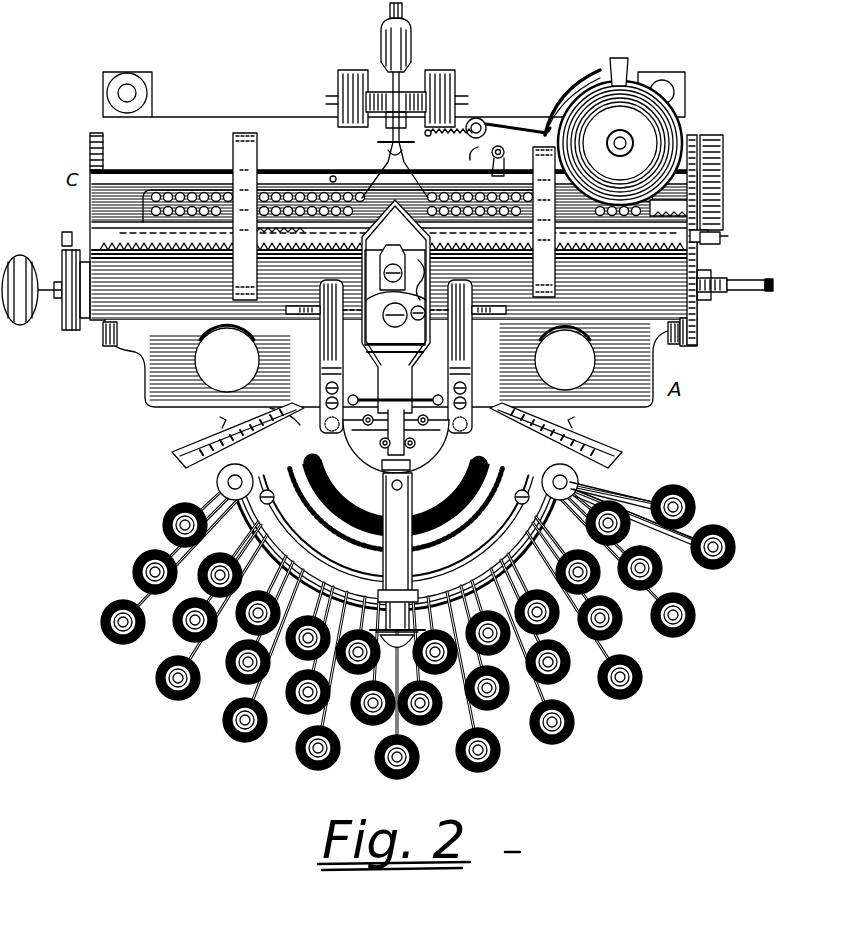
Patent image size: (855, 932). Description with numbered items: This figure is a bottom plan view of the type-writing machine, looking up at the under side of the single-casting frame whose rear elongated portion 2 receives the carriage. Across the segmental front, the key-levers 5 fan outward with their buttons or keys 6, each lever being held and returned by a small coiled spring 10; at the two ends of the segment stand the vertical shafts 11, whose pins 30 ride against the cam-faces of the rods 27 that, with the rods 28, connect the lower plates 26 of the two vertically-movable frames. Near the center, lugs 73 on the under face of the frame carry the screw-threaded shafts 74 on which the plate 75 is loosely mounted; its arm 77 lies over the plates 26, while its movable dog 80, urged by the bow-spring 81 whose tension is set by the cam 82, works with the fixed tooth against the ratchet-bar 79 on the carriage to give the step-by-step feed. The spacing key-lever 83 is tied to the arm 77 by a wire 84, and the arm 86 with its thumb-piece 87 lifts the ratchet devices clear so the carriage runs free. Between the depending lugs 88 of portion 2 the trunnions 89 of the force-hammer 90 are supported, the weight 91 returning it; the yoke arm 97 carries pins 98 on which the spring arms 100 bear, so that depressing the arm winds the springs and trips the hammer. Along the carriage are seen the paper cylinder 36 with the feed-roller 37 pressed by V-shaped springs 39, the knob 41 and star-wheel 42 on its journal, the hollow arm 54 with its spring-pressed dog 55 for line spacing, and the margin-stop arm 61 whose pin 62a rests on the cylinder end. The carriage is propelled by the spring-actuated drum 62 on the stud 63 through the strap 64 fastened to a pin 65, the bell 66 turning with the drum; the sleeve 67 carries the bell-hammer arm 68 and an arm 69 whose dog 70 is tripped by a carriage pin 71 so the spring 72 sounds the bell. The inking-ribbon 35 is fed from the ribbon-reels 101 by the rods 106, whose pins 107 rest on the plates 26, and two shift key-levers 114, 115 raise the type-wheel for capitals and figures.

The rear elongated portion 2 is at (648, 412).
The key-levers 5 is at (372, 536).
The buttons or keys 6 is at (418, 632).
The coiled springs 10 is at (360, 512).
The vertical shafts 11 is at (470, 412).
The plates 26 is at (398, 450).
The rods 27 is at (396, 441).
The rods 28 is at (396, 460).
The pins 30 is at (398, 426).
The inking-ribbon 35 is at (280, 408).
The cylinder 36 is at (176, 188).
The feed-roller 37 is at (227, 352).
The springs 39 is at (698, 362).
The knob 41 is at (32, 305).
The star-wheel 42 is at (70, 330).
The hollow arm 54 is at (735, 278).
The spring-pressed dog 55 is at (770, 288).
The arm 61 is at (723, 190).
The spring-actuated drum 62 is at (697, 135).
The pin 62a is at (722, 232).
The stud 63 is at (620, 143).
The strap 64 is at (465, 218).
The pin 65 is at (578, 80).
The bell 66 is at (628, 128).
The sleeve 67 is at (484, 118).
The bell-hammer arm 68 is at (608, 66).
The arm 69 is at (506, 152).
The spring-actuated dog 70 is at (470, 158).
The pin 71 is at (334, 176).
The spring 72 is at (444, 126).
The lugs 73 is at (472, 336).
The screw-threaded shafts 74 is at (492, 298).
The plate 75 is at (386, 321).
The arm 77 is at (380, 395).
The ratchet-bar 79 is at (456, 228).
The movable dog 80 is at (378, 278).
The bow-spring 81 is at (426, 300).
The cam 82 is at (418, 322).
The key-lever 83 is at (400, 740).
The wire 84 is at (397, 537).
The arm 86 is at (396, 568).
The thumb-piece 87 is at (384, 572).
The depending lugs 88 is at (396, 98).
The trunnions 89 is at (432, 80).
The force-hammer 90 is at (402, 10).
The weight 91 is at (378, 40).
The arm 97 is at (386, 160).
The pins 98 is at (386, 110).
The arms 100 is at (404, 158).
The ribbon-reels 101 is at (397, 435).
The vertically-movable rods 106 is at (396, 394).
The pins 107 is at (397, 420).
The key-lever 114 is at (621, 494).
The key-lever 115 is at (643, 521).